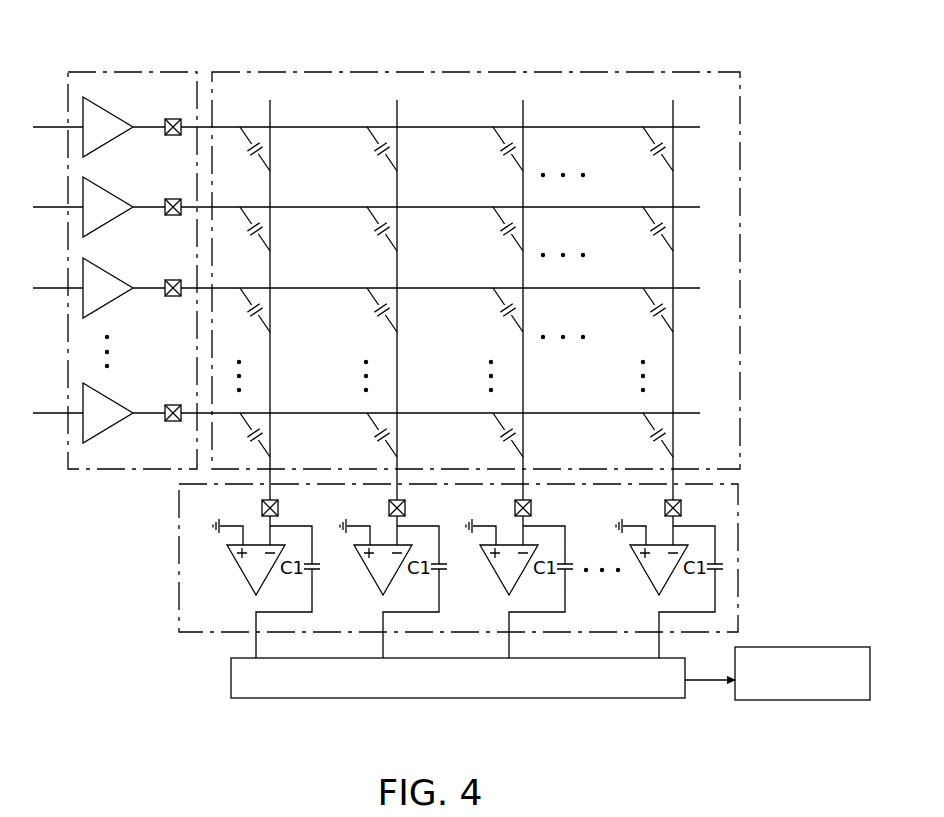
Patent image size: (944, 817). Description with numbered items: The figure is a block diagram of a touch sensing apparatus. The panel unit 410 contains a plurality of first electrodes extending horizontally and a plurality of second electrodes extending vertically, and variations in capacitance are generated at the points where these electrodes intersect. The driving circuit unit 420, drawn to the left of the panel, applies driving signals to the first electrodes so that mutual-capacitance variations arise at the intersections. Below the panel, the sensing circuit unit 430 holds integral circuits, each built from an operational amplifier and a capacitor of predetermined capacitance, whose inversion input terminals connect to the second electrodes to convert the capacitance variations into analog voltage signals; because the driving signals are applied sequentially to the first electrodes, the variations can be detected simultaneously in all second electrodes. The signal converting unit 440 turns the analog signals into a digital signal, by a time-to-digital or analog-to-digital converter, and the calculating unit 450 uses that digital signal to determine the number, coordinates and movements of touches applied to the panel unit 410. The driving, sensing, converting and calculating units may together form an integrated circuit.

The panel unit 410 is at (493, 71).
The driving circuit unit 420 is at (132, 71).
The sensing circuit unit 430 is at (178, 560).
The signal converting unit 440 is at (458, 699).
The calculating unit 450 is at (781, 700).